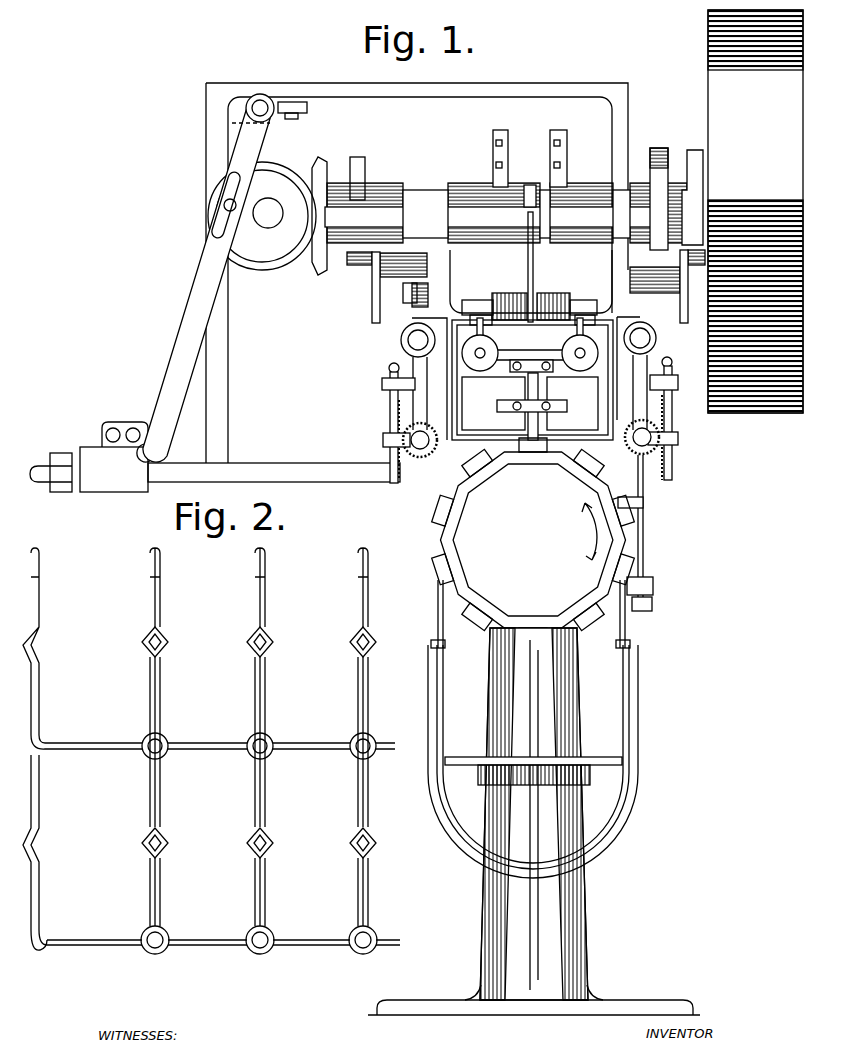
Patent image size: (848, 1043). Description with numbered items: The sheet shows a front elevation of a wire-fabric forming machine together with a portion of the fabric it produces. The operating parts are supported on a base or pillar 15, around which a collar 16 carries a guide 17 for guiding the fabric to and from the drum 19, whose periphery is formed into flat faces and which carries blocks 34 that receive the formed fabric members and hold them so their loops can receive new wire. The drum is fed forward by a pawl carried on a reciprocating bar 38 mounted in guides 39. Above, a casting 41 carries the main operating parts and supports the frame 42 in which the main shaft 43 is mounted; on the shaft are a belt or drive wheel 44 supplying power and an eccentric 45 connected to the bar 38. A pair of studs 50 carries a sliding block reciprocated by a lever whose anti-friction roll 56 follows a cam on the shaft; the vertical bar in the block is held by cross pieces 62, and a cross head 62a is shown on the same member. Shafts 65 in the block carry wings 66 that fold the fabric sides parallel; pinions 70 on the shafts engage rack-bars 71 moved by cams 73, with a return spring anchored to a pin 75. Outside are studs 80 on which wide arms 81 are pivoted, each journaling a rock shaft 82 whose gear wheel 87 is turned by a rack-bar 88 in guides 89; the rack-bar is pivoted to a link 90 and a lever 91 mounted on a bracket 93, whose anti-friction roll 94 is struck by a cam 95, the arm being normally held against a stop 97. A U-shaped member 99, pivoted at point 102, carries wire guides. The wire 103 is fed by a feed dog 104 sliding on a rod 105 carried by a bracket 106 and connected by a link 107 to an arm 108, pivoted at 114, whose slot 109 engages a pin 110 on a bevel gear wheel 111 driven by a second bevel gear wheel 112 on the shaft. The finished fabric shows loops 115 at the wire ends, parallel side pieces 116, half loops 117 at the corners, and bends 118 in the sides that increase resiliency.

In FIG. 1, the base or pillar 15 is at (578, 902).
In FIG. 1, the collar 16 is at (586, 786).
In FIG. 1, the guide 17 is at (639, 723).
In FIG. 1, the drum 19 is at (450, 548).
In FIG. 1, the blocks 34 is at (648, 580).
In FIG. 1, the reciprocating bar 38 is at (642, 604).
In FIG. 1, the guides 39 is at (673, 480).
In FIG. 1, the casting 41 is at (606, 312).
In FIG. 1, the frame 42 is at (586, 86).
In FIG. 1, the main shaft 43 is at (530, 188).
In FIG. 1, the belt or drive wheel 44 is at (755, 211).
In FIG. 1, the eccentric 45 is at (658, 148).
In FIG. 1, the studs 50 is at (466, 400).
In FIG. 1, the anti-friction roll 56 is at (526, 234).
In FIG. 1, the cross pieces 62 is at (533, 440).
In FIG. 1, the cross head 62a is at (531, 367).
In FIG. 1, the shafts 65 is at (556, 393).
In FIG. 1, the wings 66 is at (493, 403).
In FIG. 1, the pinions 70 is at (545, 295).
In FIG. 1, the rack-bars 71 is at (482, 304).
In FIG. 1, the cams 73 is at (493, 150).
In FIG. 1, the pin 75 is at (477, 356).
In FIG. 1, the studs 80 is at (418, 340).
In FIG. 1, the wide arm 81 is at (418, 403).
In FIG. 1, the rock shaft 82 is at (422, 445).
In FIG. 1, the gear wheel 87 is at (398, 455).
In FIG. 1, the rack-bars 88 is at (392, 460).
In FIG. 1, the guides 89 is at (390, 388).
In FIG. 1, the link 90 is at (390, 370).
In FIG. 1, the lever 91 is at (380, 283).
In FIG. 1, the bracket 93 is at (403, 272).
In FIG. 1, the anti-friction roll 94 is at (358, 260).
In FIG. 1, the cam 95 is at (695, 153).
In FIG. 1, the stop 97 is at (364, 172).
In FIG. 1, the U-shaped member 99 is at (645, 424).
In FIG. 1, the pivot point 102 is at (410, 337).
In FIG. 2, the wire 103 is at (216, 945).
In FIG. 1, the feed dog 104 is at (123, 422).
In FIG. 1, the rod 105 is at (268, 463).
In FIG. 1, the bracket 106 is at (229, 378).
In FIG. 1, the link 107 is at (162, 456).
In FIG. 1, the arm 108 is at (192, 331).
In FIG. 1, the slot 109 is at (215, 227).
In FIG. 1, the pin 110 is at (226, 203).
In FIG. 1, the bevel gear wheel 111 is at (277, 178).
In FIG. 1, the bevel gear wheel 112 is at (318, 167).
In FIG. 1, the pivot 114 is at (263, 104).
In FIG. 2, the loops 115 is at (168, 752).
In FIG. 2, the parallel side pieces 116 is at (40, 884).
In FIG. 2, the half loops 117 is at (38, 955).
In FIG. 2, the bends 118 is at (142, 843).